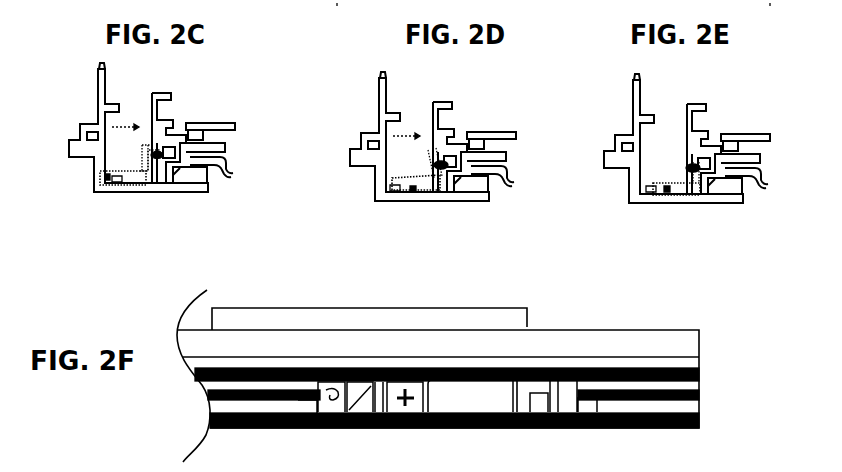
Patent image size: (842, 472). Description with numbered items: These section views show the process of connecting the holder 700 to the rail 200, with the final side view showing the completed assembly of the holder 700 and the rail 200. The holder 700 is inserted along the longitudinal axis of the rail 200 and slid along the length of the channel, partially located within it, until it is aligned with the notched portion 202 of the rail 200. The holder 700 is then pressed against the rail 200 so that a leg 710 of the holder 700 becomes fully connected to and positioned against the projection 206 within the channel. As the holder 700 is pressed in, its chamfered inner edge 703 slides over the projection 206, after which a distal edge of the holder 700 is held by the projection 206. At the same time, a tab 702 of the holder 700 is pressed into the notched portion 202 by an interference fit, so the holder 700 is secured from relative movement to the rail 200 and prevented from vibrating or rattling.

In FIG. 2C, the rail 200 is at (212, 127).
In FIG. 2D, the rail 200 is at (513, 133).
In FIG. 2E, the rail 200 is at (747, 141).
In FIG. 2F, the rail 200 is at (663, 332).
In FIG. 2C, the notched portion 202 is at (163, 157).
In FIG. 2D, the notched portion 202 is at (445, 167).
In FIG. 2E, the notched portion 202 is at (697, 171).
In FIG. 2C, the projection 206 is at (116, 178).
In FIG. 2D, the projection 206 is at (392, 197).
In FIG. 2E, the projection 206 is at (648, 190).
In FIG. 2C, the holder 700 is at (131, 169).
In FIG. 2D, the holder 700 is at (423, 170).
In FIG. 2E, the holder 700 is at (677, 182).
In FIG. 2F, the holder 700 is at (470, 388).
In FIG. 2C, the tab 702 is at (140, 155).
In FIG. 2D, the tab 702 is at (435, 156).
In FIG. 2E, the tab 702 is at (692, 168).
In FIG. 2C, the chamfered inner edge 703 is at (108, 188).
In FIG. 2D, the chamfered inner edge 703 is at (418, 194).
In FIG. 2E, the chamfered inner edge 703 is at (667, 188).
In FIG. 2D, the leg 710 is at (336, 16).
In FIG. 2E, the leg 710 is at (768, 16).